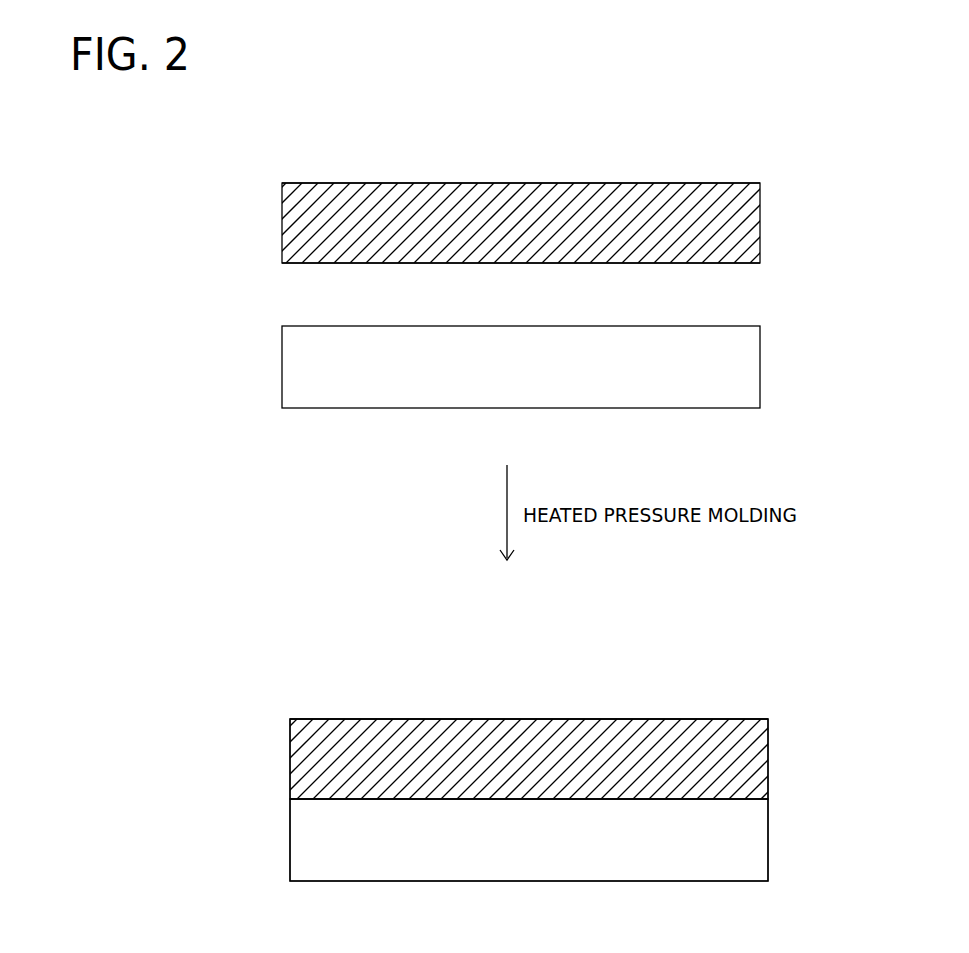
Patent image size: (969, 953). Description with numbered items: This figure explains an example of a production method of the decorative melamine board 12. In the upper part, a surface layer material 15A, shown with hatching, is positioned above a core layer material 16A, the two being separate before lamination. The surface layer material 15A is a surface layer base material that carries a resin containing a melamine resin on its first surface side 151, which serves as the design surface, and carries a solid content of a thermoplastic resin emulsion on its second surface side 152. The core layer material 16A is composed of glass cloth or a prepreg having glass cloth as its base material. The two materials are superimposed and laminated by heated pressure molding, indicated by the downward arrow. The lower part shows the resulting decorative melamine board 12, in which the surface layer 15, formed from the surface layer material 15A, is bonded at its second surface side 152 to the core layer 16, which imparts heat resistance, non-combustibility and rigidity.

The decorative melamine board 12 is at (438, 697).
The surface layer 15 is at (768, 748).
The surface layer material 15A is at (760, 210).
The core layer 16 is at (768, 836).
The core layer material 16A is at (760, 366).
The first surface side 151 is at (300, 183).
The second surface side 152 is at (298, 264).